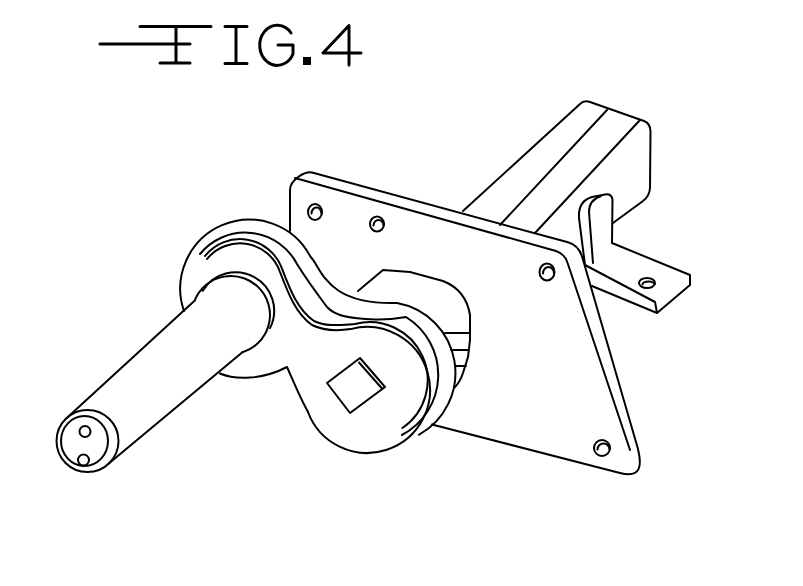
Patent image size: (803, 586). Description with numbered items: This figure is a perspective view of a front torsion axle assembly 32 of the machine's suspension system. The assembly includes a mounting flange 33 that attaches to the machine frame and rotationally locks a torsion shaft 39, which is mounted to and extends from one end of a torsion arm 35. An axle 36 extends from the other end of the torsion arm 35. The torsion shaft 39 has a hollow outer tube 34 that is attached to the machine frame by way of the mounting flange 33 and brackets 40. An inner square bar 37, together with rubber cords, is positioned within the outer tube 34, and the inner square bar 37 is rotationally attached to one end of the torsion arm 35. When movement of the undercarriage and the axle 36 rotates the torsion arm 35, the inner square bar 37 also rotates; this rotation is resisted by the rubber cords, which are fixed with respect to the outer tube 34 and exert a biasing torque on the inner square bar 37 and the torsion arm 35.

The front torsion axle assembly 32 is at (488, 483).
The mounting flange 33 is at (577, 378).
The hollow outer tube 34 is at (628, 168).
The torsion arm 35 is at (298, 365).
The axle 36 is at (138, 378).
The inner square bar 37 is at (355, 393).
The torsion shaft 39 is at (541, 116).
The bracket 40 is at (632, 272).